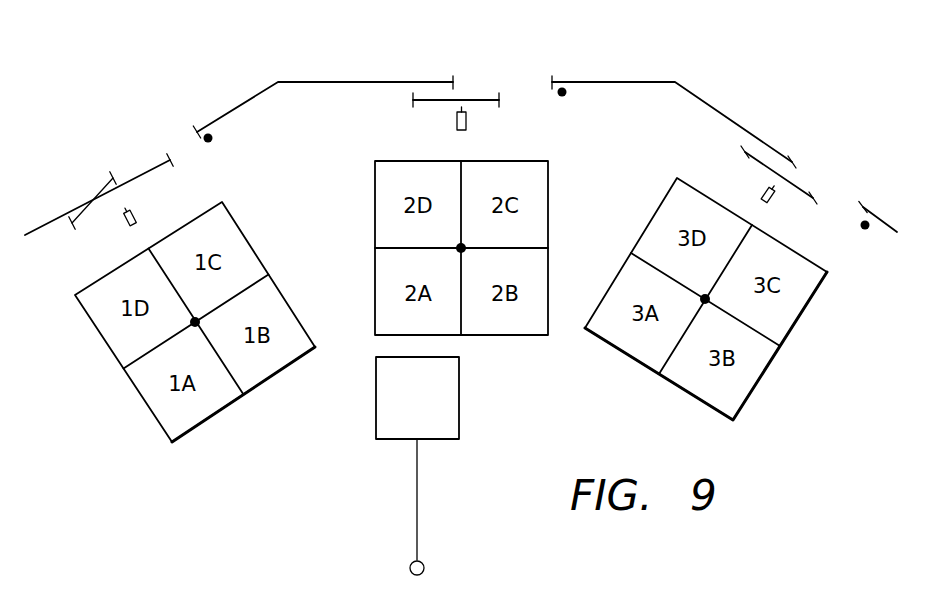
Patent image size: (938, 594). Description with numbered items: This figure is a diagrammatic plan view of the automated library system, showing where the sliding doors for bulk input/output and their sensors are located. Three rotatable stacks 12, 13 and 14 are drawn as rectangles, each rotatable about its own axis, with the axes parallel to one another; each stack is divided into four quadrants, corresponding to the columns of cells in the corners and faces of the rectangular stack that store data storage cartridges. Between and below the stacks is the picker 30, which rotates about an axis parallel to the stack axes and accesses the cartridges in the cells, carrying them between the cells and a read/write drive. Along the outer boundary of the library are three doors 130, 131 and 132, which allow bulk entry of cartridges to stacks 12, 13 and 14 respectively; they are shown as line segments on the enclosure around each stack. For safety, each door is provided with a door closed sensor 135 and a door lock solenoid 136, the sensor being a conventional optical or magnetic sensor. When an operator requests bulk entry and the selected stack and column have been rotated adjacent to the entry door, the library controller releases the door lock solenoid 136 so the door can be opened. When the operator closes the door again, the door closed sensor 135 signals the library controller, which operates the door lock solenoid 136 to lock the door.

The rotatable stack 12 is at (831, 320).
The rotatable stack 13 is at (585, 171).
The rotatable stack 14 is at (267, 209).
The picker 30 is at (460, 398).
The door 130 is at (802, 183).
The door 131 is at (487, 93).
The door 132 is at (150, 168).
The door closed sensor 135 is at (567, 90).
The door lock solenoid 136 is at (454, 117).